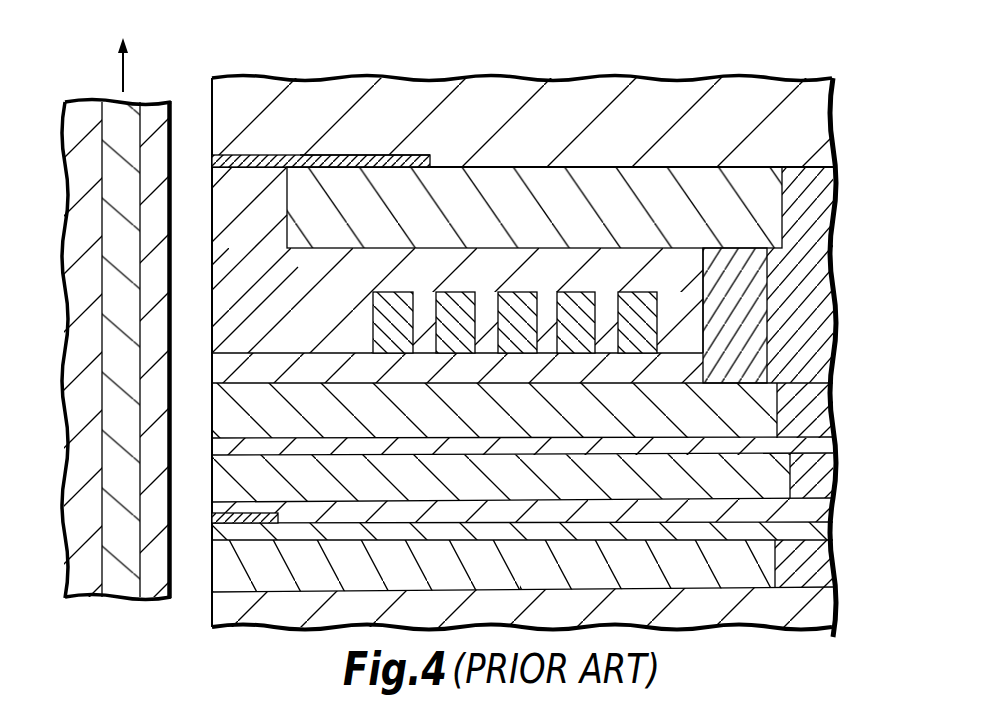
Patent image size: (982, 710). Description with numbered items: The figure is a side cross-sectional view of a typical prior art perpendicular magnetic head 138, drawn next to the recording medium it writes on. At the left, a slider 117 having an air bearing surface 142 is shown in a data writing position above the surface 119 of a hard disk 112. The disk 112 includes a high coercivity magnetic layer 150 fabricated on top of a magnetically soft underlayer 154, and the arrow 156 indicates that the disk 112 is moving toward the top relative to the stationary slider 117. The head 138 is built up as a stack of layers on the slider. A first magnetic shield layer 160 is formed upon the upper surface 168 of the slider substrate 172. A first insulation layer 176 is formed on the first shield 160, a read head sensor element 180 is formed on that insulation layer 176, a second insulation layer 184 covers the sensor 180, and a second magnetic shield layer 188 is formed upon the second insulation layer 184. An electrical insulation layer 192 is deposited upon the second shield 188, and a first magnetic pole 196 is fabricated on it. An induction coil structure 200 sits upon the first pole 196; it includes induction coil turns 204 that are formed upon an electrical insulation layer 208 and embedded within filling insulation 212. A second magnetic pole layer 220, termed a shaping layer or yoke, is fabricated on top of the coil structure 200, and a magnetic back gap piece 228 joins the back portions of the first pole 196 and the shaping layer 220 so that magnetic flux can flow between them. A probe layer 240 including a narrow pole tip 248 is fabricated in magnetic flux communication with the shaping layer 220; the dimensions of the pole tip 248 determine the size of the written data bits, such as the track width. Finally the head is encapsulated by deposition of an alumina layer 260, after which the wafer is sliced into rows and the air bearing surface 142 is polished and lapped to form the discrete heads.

The hard disk 112 is at (83, 98).
The magnetically soft underlayer 154 is at (115, 582).
The high coercivity magnetic layer 150 is at (153, 583).
The surface of the hard disk 119 is at (169, 575).
The arrow 156 is at (121, 72).
The perpendicular magnetic head 138 is at (318, 68).
The air bearing surface 142 is at (207, 102).
The slider substrate 172 is at (765, 620).
The alumina layer 260 is at (583, 131).
The narrow pole tip 248 is at (233, 155).
The probe layer 240 is at (342, 153).
The second magnetic pole layer 220 is at (750, 212).
The filling insulation 212 is at (327, 314).
The induction coil turns 204 is at (530, 285).
The magnetic back gap piece 228 is at (750, 323).
The induction coil structure 200 is at (680, 283).
The electrical insulation layer 208 is at (693, 368).
The first magnetic pole 196 is at (763, 412).
The electrical insulation layer 192 is at (813, 445).
The second magnetic shield layer 188 is at (772, 482).
The second insulation layer 184 is at (810, 517).
The read head sensor element 180 is at (253, 510).
The first insulation layer 176 is at (807, 530).
The first magnetic shield layer 160 is at (767, 562).
The upper surface of the slider substrate 168 is at (750, 585).
The slider 117 is at (337, 613).